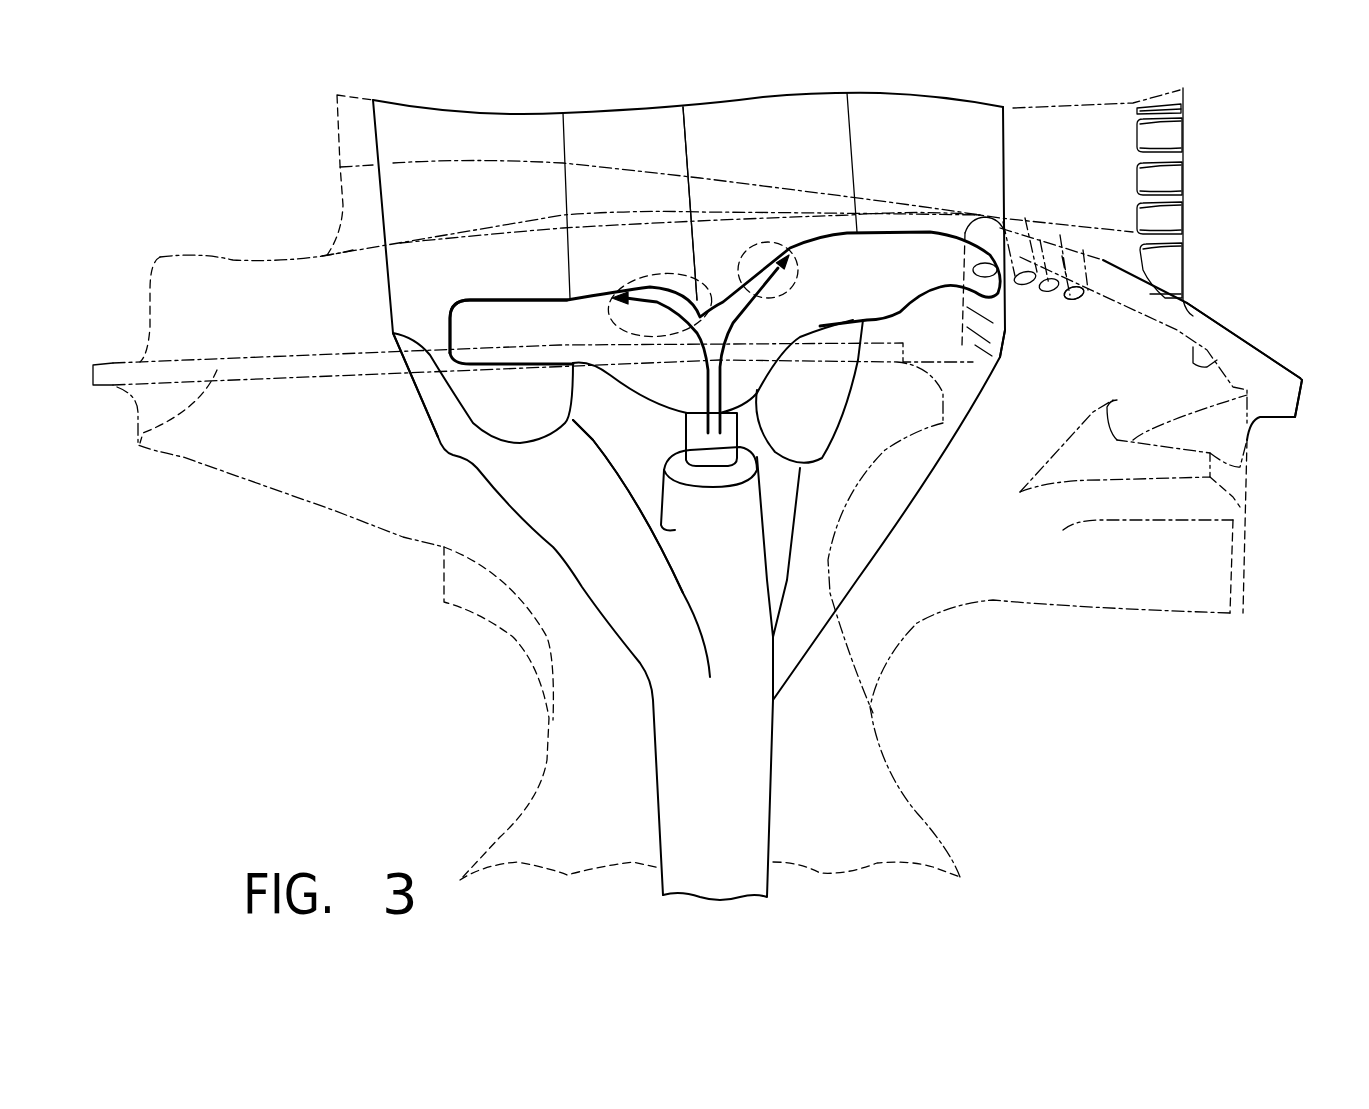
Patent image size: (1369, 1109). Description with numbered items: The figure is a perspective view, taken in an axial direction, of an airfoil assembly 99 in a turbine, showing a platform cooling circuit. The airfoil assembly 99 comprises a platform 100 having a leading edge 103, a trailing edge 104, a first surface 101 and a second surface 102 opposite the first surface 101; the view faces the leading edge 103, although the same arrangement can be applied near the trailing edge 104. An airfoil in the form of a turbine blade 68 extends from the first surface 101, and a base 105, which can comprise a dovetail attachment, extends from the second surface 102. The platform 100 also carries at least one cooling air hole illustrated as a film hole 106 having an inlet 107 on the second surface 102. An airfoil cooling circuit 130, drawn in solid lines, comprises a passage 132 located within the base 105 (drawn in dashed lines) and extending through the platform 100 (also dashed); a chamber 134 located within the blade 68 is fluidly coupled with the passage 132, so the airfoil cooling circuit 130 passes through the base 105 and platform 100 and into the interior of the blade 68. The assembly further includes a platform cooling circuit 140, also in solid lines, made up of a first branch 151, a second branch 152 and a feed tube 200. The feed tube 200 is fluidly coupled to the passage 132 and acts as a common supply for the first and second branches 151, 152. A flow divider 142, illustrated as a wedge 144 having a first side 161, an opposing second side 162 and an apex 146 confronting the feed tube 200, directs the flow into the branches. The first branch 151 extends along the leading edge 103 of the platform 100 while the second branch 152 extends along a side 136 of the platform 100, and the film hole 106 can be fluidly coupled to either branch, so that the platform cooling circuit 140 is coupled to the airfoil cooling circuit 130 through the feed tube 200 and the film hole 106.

The airfoil assembly 99 is at (204, 61).
The turbine blade 68 is at (1060, 123).
The platform 100 is at (227, 280).
The first surface 101 is at (1213, 320).
The second surface 102 is at (1213, 373).
The leading edge 103 is at (137, 433).
The trailing edge 104 is at (1356, 356).
The base 105 is at (863, 813).
The film hole 106 is at (1037, 247).
The inlet 107 is at (1073, 300).
The airfoil cooling circuit 130 is at (421, 451).
The passage 132 is at (507, 460).
The chamber 134 is at (463, 123).
The side 136 is at (1120, 280).
The platform cooling circuit 140 is at (644, 432).
The flow divider 142 is at (790, 260).
The wedge 144 is at (720, 257).
The apex 146 is at (753, 302).
The first branch 151 is at (505, 317).
The second branch 152 is at (910, 243).
The first side 161 is at (677, 290).
The second side 162 is at (747, 283).
The feed tube 200 is at (717, 470).